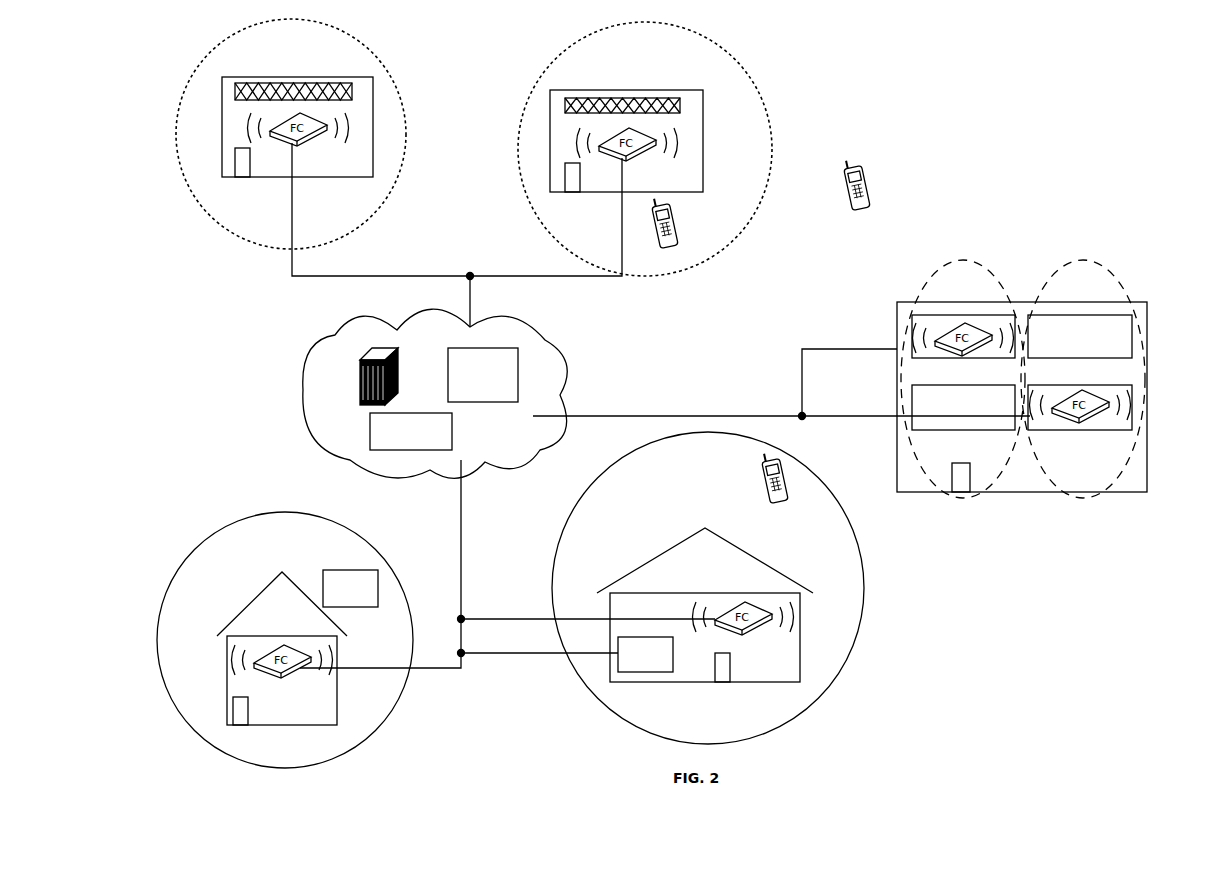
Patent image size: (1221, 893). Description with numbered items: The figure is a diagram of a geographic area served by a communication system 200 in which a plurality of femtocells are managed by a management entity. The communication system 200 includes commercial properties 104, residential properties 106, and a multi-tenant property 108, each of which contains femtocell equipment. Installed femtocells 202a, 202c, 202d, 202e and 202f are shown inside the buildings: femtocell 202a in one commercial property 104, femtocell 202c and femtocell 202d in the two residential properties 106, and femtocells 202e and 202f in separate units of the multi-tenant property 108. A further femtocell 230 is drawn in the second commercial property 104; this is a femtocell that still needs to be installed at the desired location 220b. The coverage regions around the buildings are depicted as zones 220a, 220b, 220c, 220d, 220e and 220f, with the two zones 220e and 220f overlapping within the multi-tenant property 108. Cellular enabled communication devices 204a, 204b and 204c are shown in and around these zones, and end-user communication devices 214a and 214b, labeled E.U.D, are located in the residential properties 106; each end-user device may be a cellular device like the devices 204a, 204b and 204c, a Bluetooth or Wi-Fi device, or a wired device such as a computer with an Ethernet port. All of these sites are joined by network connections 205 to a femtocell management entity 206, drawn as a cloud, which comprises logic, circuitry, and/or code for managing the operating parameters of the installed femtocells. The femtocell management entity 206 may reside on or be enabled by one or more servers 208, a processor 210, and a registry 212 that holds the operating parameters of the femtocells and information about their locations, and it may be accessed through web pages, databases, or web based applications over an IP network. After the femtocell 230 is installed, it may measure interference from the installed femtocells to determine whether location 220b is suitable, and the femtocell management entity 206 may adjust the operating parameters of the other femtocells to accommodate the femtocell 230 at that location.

The communication system 200 is at (1046, 123).
The commercial properties 104 is at (247, 77).
The residential properties 106 is at (255, 598).
The multi-tenant properties 108 is at (1148, 325).
The installed femtocell 202a is at (300, 145).
The installed femtocell 202c is at (290, 674).
The installed femtocell 202d is at (752, 632).
The installed femtocell 202e is at (975, 350).
The installed femtocell 202f is at (1095, 418).
The cellular enabled communication device 204a is at (852, 212).
The cellular enabled communication device 204b is at (660, 250).
The cellular enabled communication device 204c is at (775, 503).
The network connection 205 is at (470, 310).
The femtocell management entity 206 is at (508, 330).
The servers 208 is at (398, 352).
The processor 210 is at (452, 427).
The registry 212 is at (518, 378).
The end-user communication device 214a is at (673, 660).
The end-user communication device 214b is at (350, 570).
The zone 220a is at (383, 64).
The location 220b is at (738, 58).
The zone 220c is at (315, 518).
The zone 220d is at (863, 563).
The zone 220e is at (950, 498).
The zone 220f is at (1085, 498).
The femtocell 230 is at (640, 152).